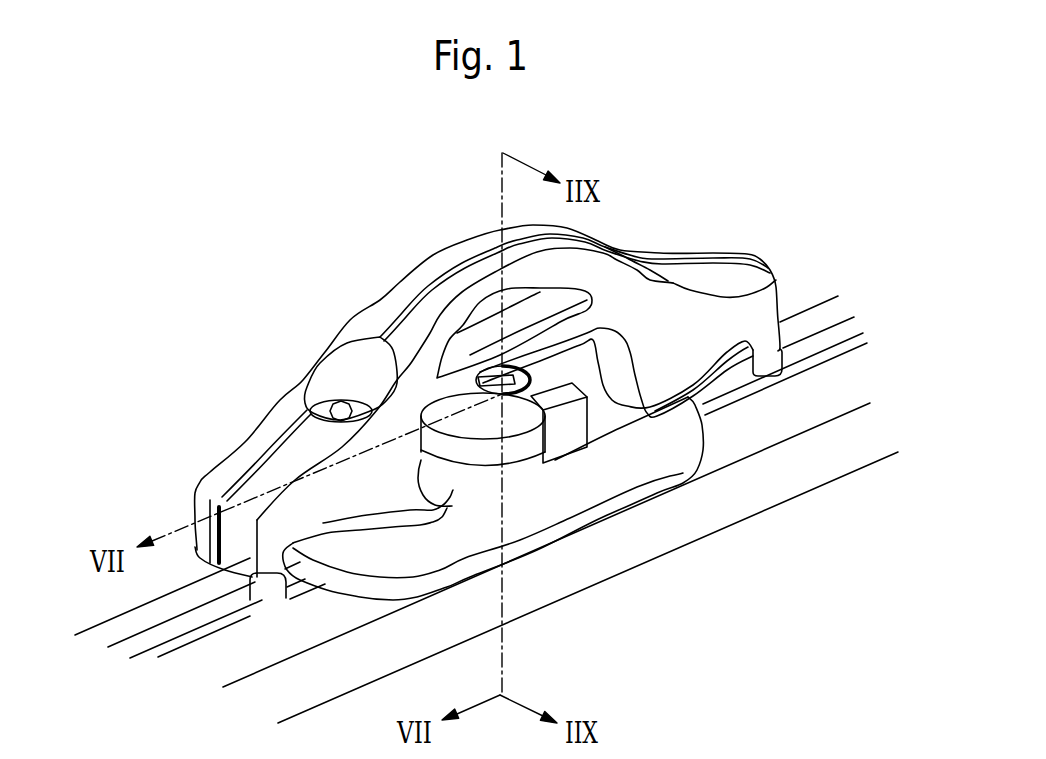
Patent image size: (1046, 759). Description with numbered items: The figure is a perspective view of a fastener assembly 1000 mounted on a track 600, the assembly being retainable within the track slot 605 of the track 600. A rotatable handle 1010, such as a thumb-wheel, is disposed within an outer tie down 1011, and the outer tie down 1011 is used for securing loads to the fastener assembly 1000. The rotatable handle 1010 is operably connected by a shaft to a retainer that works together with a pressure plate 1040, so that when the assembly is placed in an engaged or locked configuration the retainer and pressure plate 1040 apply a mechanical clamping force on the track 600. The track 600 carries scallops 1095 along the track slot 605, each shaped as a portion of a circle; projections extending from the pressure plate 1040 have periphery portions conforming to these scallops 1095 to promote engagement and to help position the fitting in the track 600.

The fastener assembly 1000 is at (698, 188).
The outer tie down 1011 is at (466, 306).
The rotatable handle 1010 is at (522, 448).
The pressure plate 1040 is at (633, 472).
The scallops 1095 is at (763, 363).
The track 600 is at (813, 318).
The track slot 605 is at (183, 642).